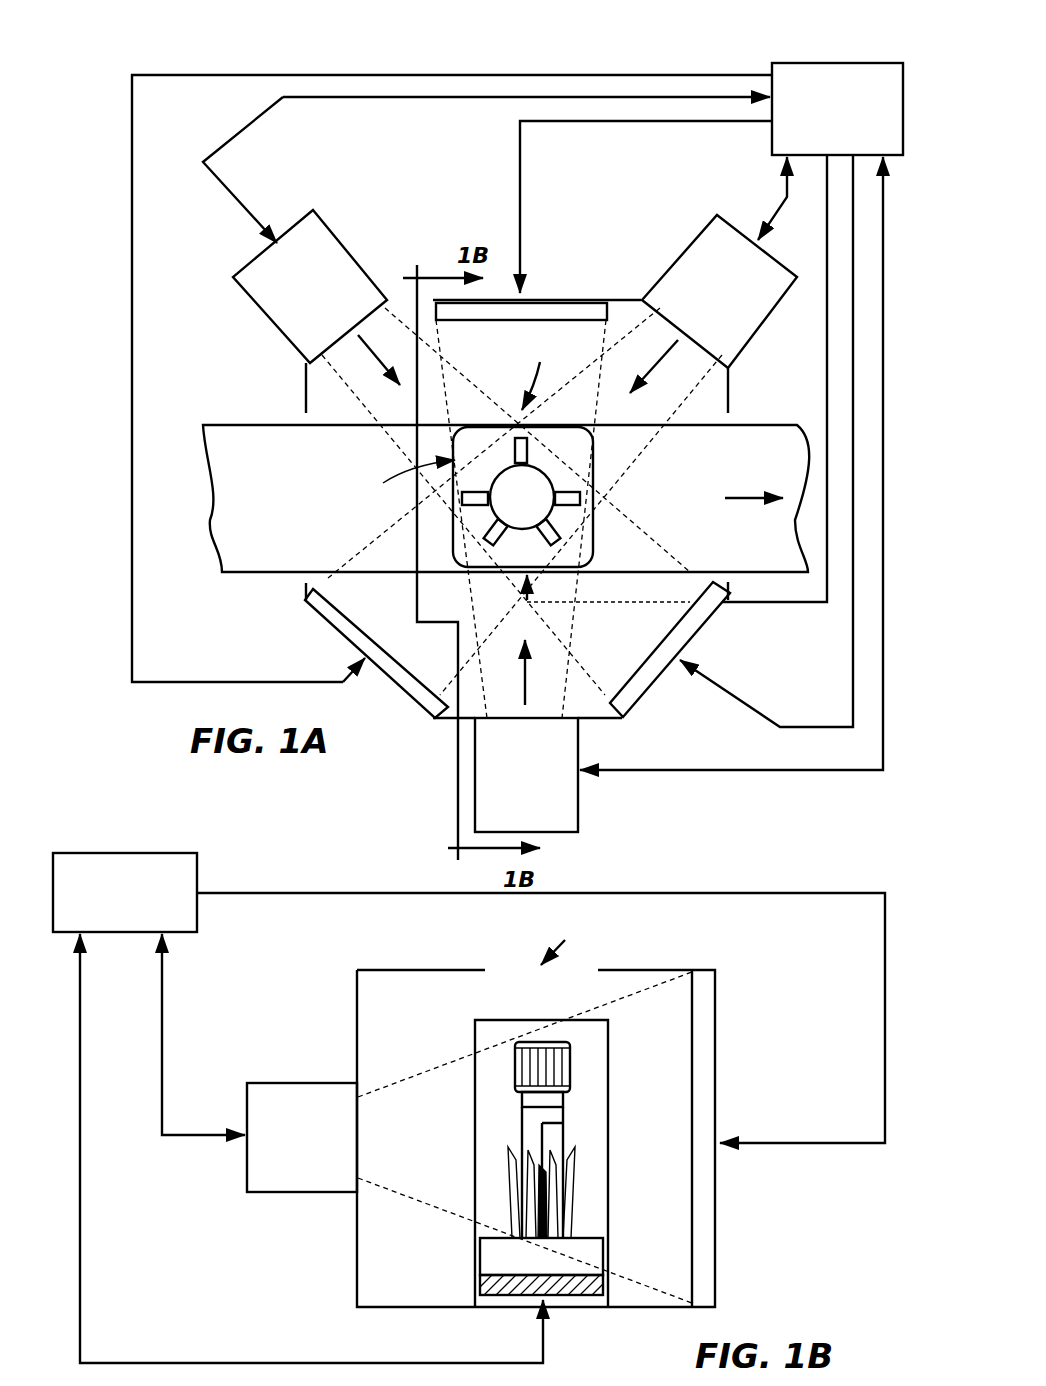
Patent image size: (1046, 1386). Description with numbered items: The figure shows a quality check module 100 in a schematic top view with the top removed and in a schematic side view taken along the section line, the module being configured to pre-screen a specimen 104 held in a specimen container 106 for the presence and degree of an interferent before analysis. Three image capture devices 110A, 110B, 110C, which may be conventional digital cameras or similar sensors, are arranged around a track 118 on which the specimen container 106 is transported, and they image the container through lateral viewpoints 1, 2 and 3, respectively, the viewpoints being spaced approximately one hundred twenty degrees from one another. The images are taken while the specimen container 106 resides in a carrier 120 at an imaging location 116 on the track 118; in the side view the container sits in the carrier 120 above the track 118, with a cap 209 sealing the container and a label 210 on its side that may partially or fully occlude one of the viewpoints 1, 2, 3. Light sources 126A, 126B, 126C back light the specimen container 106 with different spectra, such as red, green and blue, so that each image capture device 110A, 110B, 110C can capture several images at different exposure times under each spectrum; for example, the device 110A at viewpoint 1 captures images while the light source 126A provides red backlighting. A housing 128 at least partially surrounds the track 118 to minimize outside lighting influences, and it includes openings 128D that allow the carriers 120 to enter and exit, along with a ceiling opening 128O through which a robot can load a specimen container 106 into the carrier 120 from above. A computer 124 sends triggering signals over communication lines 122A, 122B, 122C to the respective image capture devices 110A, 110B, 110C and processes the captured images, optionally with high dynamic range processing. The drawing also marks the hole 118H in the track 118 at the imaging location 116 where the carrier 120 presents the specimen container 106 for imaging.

In FIG. 1A, the quality check module 100 is at (355, 50).
In FIG. 1B, the quality check module 100 is at (713, 875).
In FIG. 1A, the computer 124 is at (835, 63).
In FIG. 1B, the computer 124 is at (120, 853).
In FIG. 1A, the communication line 122A is at (883, 295).
In FIG. 1B, the communication line 122A is at (176, 1142).
In FIG. 1A, the communication line 122B is at (403, 97).
In FIG. 1A, the communication line 122C is at (787, 197).
In FIG. 1A, the image capture device 110A is at (580, 800).
In FIG. 1B, the image capture device 110A is at (292, 1083).
In FIG. 1A, the image capture device 110B is at (277, 332).
In FIG. 1A, the image capture device 110C is at (762, 325).
In FIG. 1A, the light source 126A is at (543, 298).
In FIG. 1B, the light source 126A is at (718, 1062).
In FIG. 1A, the light source 126B is at (697, 638).
In FIG. 1A, the light source 126C is at (347, 645).
In FIG. 1A, the housing 128 is at (618, 298).
In FIG. 1B, the housing 128 is at (357, 980).
In FIG. 1A, the opening 128D is at (305, 417).
In FIG. 1B, the opening 128D is at (473, 1050).
In FIG. 1B, the opening 128O is at (573, 937).
In FIG. 1A, the imaging location 116 is at (543, 372).
In FIG. 1A, the track 118 is at (283, 514).
In FIG. 1B, the track 118 is at (513, 1297).
In FIG. 1A, the stage hole 118H is at (588, 490).
In FIG. 1A, the carrier 120 is at (399, 486).
In FIG. 1B, the carrier 120 is at (608, 1257).
In FIG. 1A, the specimen container 106 is at (602, 497).
In FIG. 1B, the specimen container 106 is at (522, 1043).
In FIG. 1A, the cap 209 is at (530, 485).
In FIG. 1B, the cap 209 is at (555, 1040).
In FIG. 1B, the specimen 104 is at (521, 1127).
In FIG. 1B, the label 210 is at (563, 1130).
In FIG. 1A, the viewpoint 1 is at (532, 673).
In FIG. 1A, the viewpoint 2 is at (378, 370).
In FIG. 1A, the viewpoint 3 is at (660, 372).